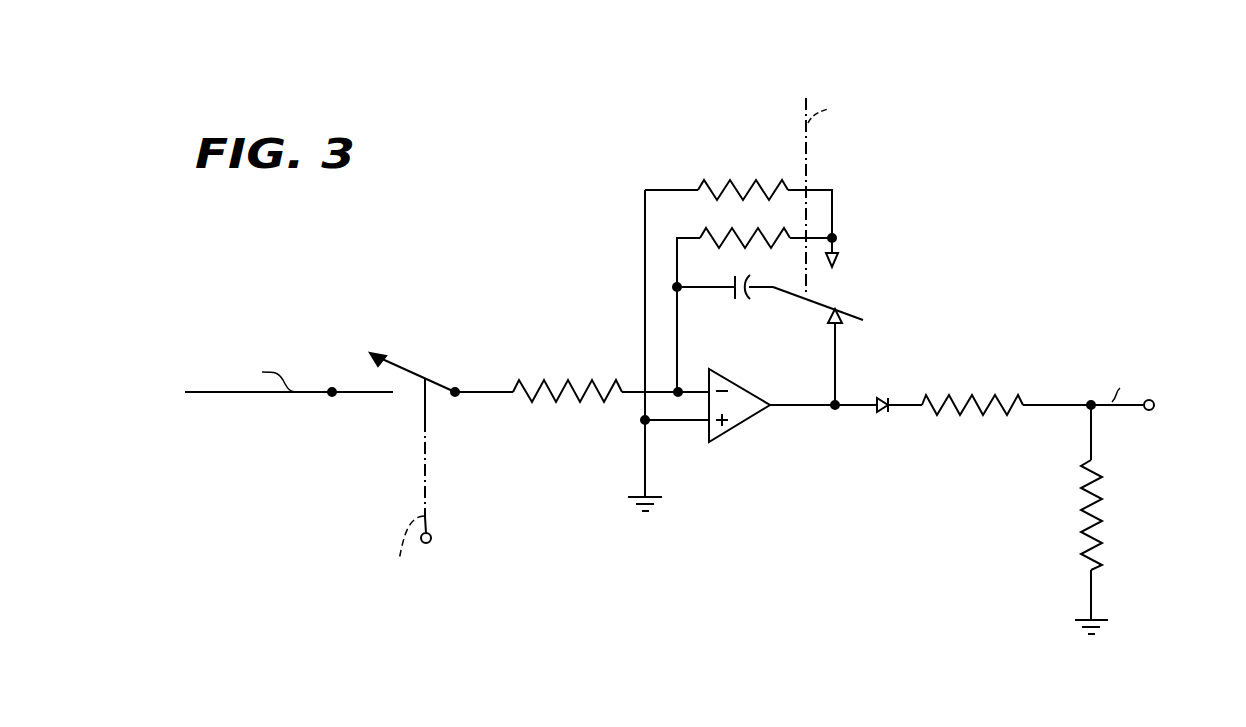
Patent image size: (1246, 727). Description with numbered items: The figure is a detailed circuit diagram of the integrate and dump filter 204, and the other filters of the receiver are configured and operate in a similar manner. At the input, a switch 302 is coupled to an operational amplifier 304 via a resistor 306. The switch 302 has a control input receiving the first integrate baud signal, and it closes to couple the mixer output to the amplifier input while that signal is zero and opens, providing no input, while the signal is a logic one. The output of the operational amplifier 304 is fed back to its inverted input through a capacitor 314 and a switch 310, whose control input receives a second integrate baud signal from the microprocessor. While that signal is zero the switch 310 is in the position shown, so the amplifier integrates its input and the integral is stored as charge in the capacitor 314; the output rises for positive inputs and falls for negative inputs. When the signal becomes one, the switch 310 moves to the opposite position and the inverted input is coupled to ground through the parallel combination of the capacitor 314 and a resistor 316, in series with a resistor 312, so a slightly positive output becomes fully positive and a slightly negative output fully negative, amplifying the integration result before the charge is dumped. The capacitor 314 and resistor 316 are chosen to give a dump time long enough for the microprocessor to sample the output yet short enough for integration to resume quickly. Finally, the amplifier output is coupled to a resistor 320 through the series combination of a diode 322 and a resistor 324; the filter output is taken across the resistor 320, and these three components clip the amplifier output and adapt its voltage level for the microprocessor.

The integrate and dump filter 204 is at (402, 283).
The switch 302 is at (458, 388).
The operational amplifier 304 is at (738, 425).
The resistor 306 is at (567, 397).
The switch 310 is at (840, 288).
The resistor 312 is at (738, 180).
The capacitor 314 is at (744, 300).
The resistor 316 is at (714, 230).
The resistor 320 is at (1084, 496).
The diode 322 is at (891, 410).
The resistor 324 is at (960, 397).